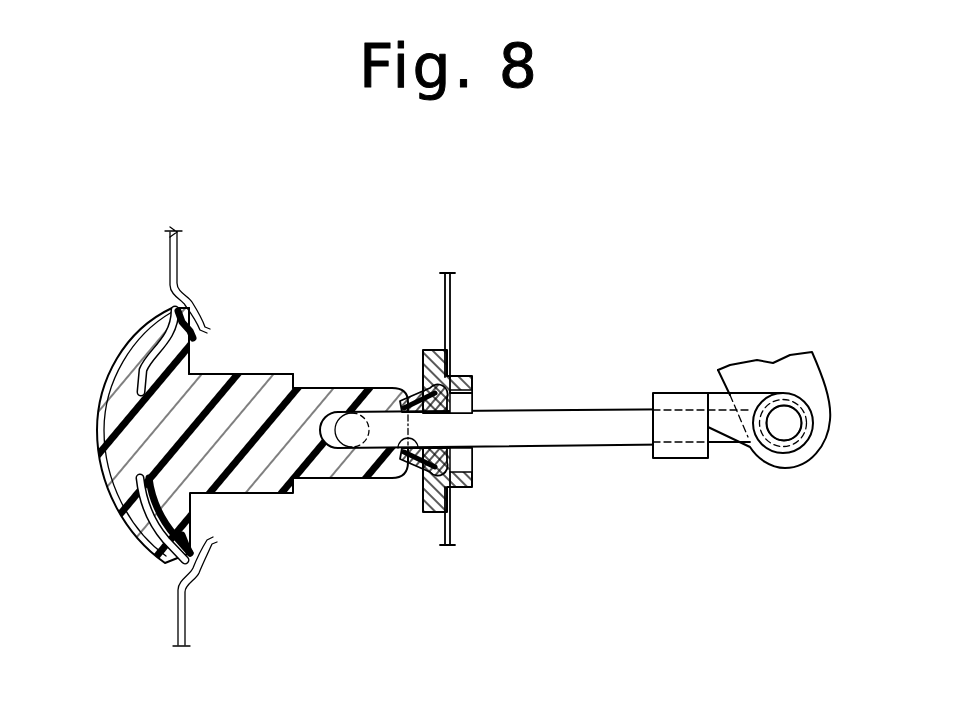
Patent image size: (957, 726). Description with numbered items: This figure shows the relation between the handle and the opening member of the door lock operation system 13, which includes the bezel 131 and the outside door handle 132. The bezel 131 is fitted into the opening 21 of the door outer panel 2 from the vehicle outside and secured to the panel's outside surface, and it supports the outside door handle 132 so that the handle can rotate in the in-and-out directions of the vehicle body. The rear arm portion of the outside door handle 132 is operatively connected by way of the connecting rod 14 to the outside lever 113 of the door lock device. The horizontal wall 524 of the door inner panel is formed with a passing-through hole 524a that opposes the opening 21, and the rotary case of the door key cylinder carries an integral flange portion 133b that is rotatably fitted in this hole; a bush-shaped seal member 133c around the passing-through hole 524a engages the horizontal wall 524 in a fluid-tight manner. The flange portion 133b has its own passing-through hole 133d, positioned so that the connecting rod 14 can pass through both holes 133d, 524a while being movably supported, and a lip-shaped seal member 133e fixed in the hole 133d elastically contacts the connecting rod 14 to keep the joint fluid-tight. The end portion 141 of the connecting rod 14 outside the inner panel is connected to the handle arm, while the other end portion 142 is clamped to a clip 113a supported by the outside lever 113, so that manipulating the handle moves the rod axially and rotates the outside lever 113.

The door outer panel 2 is at (168, 264).
The door lock operation system 13 is at (113, 342).
The bezel 131 is at (195, 357).
The outside door handle 132 is at (112, 523).
The opening 21 is at (217, 525).
The connecting rod 14 is at (595, 450).
The end portion 141 is at (349, 425).
The flange portion 133b is at (453, 490).
The bush-shaped seal member 133c is at (442, 512).
The passing-through hole 133d is at (403, 465).
The lip-shaped seal member 133e is at (414, 395).
The horizontal wall 524 is at (451, 302).
The passing-through hole 524a is at (452, 393).
The outside lever 113 is at (792, 365).
The clip 113a is at (680, 393).
The end portion 142 is at (783, 432).